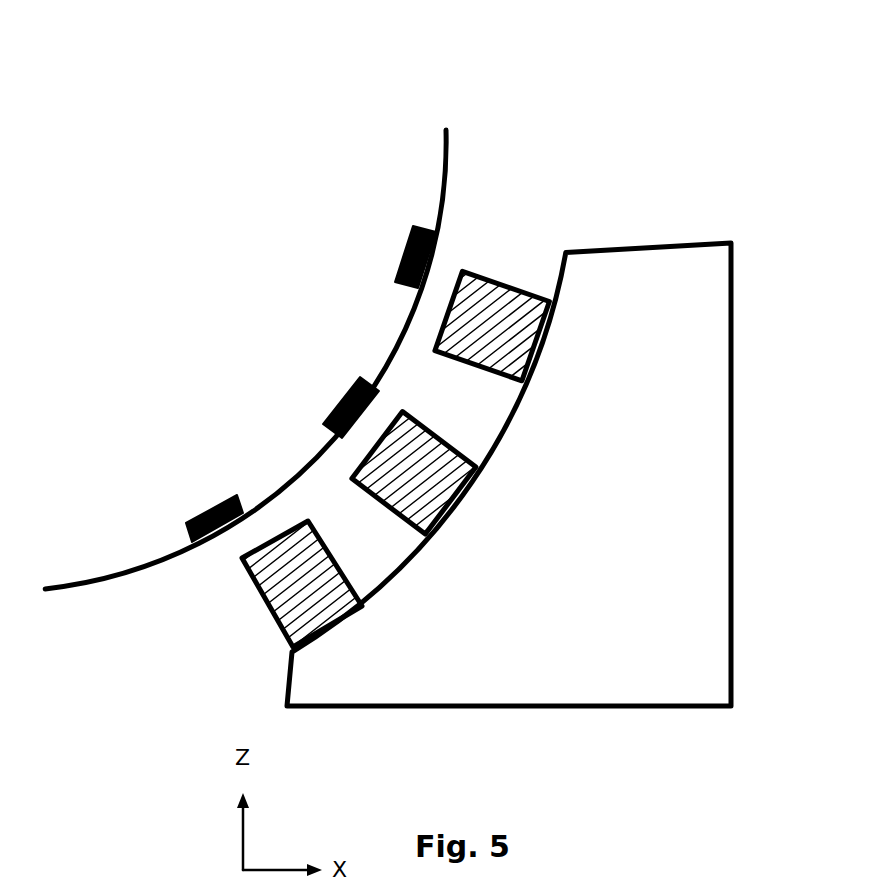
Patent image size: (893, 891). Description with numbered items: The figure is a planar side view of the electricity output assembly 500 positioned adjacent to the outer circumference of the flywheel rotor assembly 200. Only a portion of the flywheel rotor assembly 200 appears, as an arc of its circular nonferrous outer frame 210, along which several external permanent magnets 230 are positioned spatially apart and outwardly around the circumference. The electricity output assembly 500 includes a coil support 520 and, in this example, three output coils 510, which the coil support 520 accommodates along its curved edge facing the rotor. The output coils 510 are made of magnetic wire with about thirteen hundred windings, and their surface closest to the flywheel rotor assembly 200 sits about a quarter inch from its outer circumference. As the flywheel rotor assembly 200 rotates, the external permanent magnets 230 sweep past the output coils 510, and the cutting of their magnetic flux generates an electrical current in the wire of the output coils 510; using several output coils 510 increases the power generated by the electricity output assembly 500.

The flywheel rotor assembly 200 is at (425, 128).
The circular nonferrous outer frame 210 is at (447, 192).
The external permanent magnets 230 is at (342, 395).
The electricity output assembly 500 is at (634, 204).
The output coils 510 is at (521, 339).
The coil support 520 is at (615, 579).